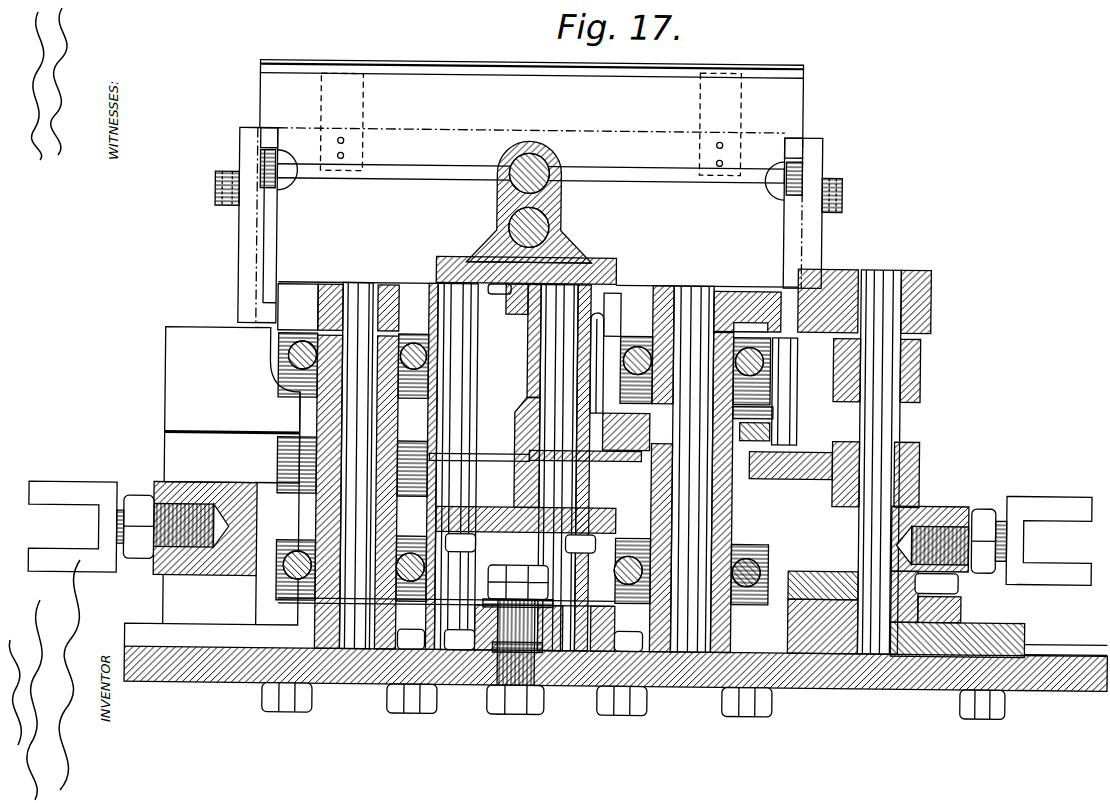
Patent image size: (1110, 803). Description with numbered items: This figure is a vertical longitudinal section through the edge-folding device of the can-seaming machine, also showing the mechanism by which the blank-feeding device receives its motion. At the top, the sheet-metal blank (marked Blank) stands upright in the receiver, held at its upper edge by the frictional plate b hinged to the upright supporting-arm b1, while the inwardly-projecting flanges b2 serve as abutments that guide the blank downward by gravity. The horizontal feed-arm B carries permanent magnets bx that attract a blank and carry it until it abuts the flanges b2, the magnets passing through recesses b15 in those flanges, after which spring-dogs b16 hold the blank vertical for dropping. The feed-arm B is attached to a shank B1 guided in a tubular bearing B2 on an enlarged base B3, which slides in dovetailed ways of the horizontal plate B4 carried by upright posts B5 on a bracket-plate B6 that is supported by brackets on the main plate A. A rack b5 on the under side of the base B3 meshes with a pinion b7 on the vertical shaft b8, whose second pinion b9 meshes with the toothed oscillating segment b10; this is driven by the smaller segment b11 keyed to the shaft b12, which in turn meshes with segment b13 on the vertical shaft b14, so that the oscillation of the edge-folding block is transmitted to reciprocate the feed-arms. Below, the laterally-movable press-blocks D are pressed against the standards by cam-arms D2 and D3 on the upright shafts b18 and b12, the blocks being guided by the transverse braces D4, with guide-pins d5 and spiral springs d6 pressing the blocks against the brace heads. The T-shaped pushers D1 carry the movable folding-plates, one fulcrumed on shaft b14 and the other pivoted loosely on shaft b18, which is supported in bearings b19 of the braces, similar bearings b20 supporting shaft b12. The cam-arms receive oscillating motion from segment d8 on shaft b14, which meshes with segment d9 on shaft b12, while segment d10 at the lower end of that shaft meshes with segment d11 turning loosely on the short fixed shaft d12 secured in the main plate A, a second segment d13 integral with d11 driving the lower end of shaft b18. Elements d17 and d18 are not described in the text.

The plates b is at (532, 89).
The upright supporting-arms b1 is at (339, 85).
The blank Blank is at (488, 103).
The horizontal reciprocating feed-arms B is at (530, 163).
The inwardly-projecting flanges b2 is at (530, 227).
The recesses b15 is at (262, 160).
The spring-dogs b16 is at (213, 190).
The permanent magnets bx is at (285, 178).
The shanks B1 is at (527, 165).
The tubular bearings B2 is at (500, 212).
The enlarged base B3 is at (565, 264).
The horizontal plate B4 is at (437, 268).
The laterally-movable blocks D is at (642, 294).
The lateral cam-arm D2 is at (336, 297).
The lateral cam-arm D3 is at (712, 290).
The transverse braces D4 is at (395, 352).
The T-shaped pushers D1 is at (561, 520).
The guide-pins d5 is at (300, 357).
The spiral springs d6 is at (630, 355).
The segment d8 is at (762, 584).
The segment d9 is at (745, 293).
The segment d10 is at (627, 632).
The segment d11 is at (560, 612).
The intermediate short shaft d12 is at (518, 640).
The segment d13 is at (460, 631).
The washer d17 is at (525, 665).
The nut d18 is at (407, 630).
The rack b5 is at (498, 292).
The pinion b7 is at (520, 312).
The vertical shaft b8 is at (558, 366).
The second pinion b9 is at (515, 434).
The toothed oscillating segment b10 is at (636, 420).
The smaller segment b11 is at (754, 437).
The shaft b12 is at (693, 304).
The segment b13 is at (788, 462).
The vertical shaft b14 is at (884, 420).
The upright shaft b18 is at (359, 418).
The bearings b19 is at (420, 372).
The bearings b20 is at (772, 404).
The upright posts B5 is at (468, 390).
The bracket-plate B6 is at (508, 552).
The main plate A is at (342, 662).